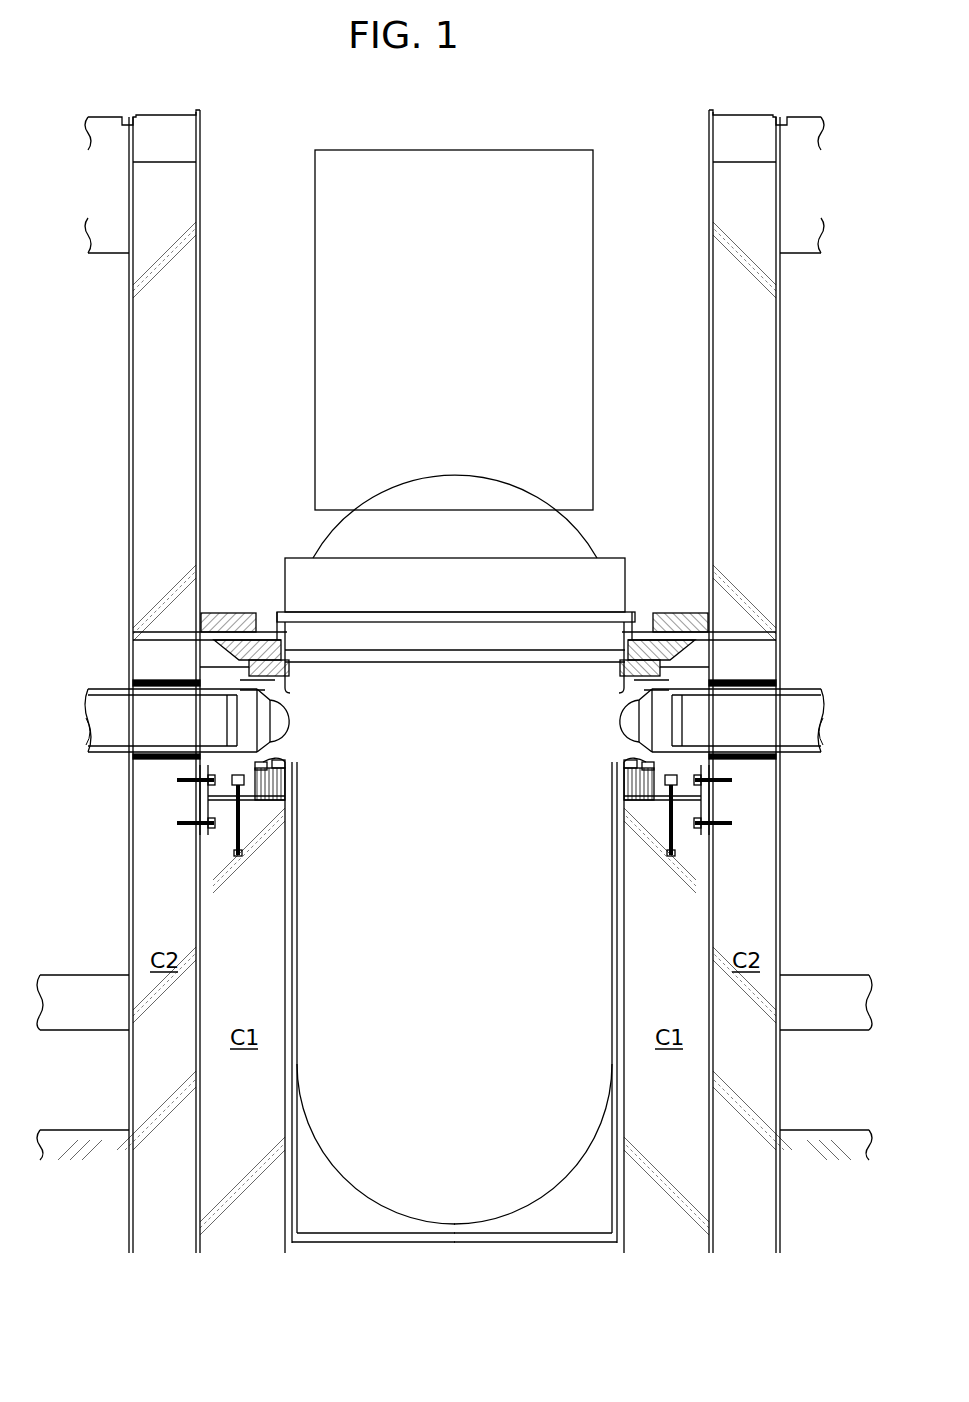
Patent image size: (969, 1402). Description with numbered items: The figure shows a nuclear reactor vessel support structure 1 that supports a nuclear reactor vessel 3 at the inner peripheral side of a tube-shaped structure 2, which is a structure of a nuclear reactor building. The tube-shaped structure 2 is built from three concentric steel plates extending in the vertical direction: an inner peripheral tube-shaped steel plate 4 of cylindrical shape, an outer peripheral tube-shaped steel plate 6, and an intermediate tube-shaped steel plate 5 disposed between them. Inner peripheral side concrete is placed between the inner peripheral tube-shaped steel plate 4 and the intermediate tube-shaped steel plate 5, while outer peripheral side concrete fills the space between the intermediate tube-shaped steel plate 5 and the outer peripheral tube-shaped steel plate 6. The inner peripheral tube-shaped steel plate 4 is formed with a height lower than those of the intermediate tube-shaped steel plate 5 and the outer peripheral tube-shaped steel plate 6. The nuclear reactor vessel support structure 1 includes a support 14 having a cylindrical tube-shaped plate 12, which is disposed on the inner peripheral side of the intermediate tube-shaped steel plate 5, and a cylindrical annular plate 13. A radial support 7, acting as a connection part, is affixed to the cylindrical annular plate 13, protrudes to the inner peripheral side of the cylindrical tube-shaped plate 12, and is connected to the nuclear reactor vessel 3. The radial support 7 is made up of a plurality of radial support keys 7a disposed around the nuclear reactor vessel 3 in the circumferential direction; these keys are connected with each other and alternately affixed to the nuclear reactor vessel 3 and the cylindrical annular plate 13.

The nuclear reactor vessel support structure 1 is at (454, 705).
The tube-shaped structure 2 is at (454, 705).
The nuclear reactor vessel 3 is at (609, 552).
The inner peripheral tube-shaped steel plate 4 is at (285, 1222).
The intermediate tube-shaped steel plate 5 is at (198, 1223).
The outer peripheral tube-shaped steel plate 6 is at (129, 1233).
The radial support 7 is at (455, 738).
The radial support key 7a is at (255, 770).
The cylindrical tube-shaped plate 12 is at (207, 798).
The cylindrical annular plate 13 is at (254, 811).
The support 14 is at (257, 822).